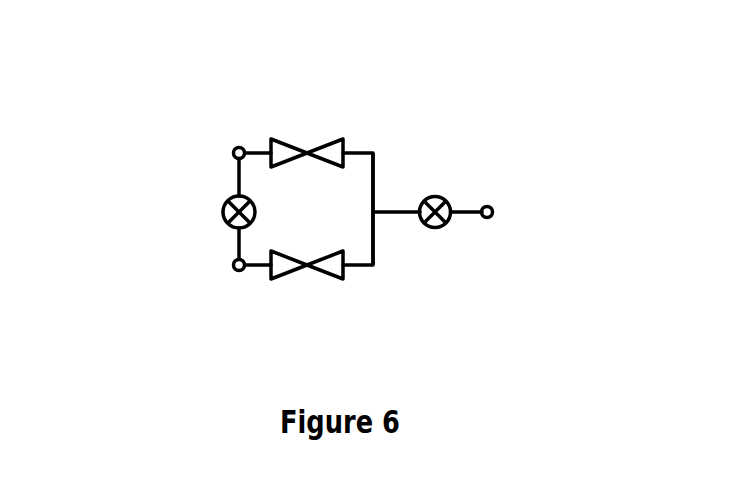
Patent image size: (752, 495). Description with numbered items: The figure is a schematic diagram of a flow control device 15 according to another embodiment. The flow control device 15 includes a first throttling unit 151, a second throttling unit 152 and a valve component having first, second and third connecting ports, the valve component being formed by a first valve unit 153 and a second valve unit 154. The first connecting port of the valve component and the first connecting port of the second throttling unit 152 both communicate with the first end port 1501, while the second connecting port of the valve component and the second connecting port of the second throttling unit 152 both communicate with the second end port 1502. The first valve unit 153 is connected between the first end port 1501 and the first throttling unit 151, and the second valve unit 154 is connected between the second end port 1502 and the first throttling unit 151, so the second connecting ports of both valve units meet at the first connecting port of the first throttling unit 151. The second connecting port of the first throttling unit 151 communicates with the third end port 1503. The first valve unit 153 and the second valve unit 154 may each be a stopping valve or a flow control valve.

The flow control device 15 is at (385, 145).
The first throttling unit 151 is at (441, 236).
The second throttling unit 152 is at (212, 213).
The first valve unit 153 is at (305, 133).
The second valve unit 154 is at (312, 285).
The first end port 1501 is at (233, 148).
The second end port 1502 is at (233, 266).
The third end port 1503 is at (488, 200).